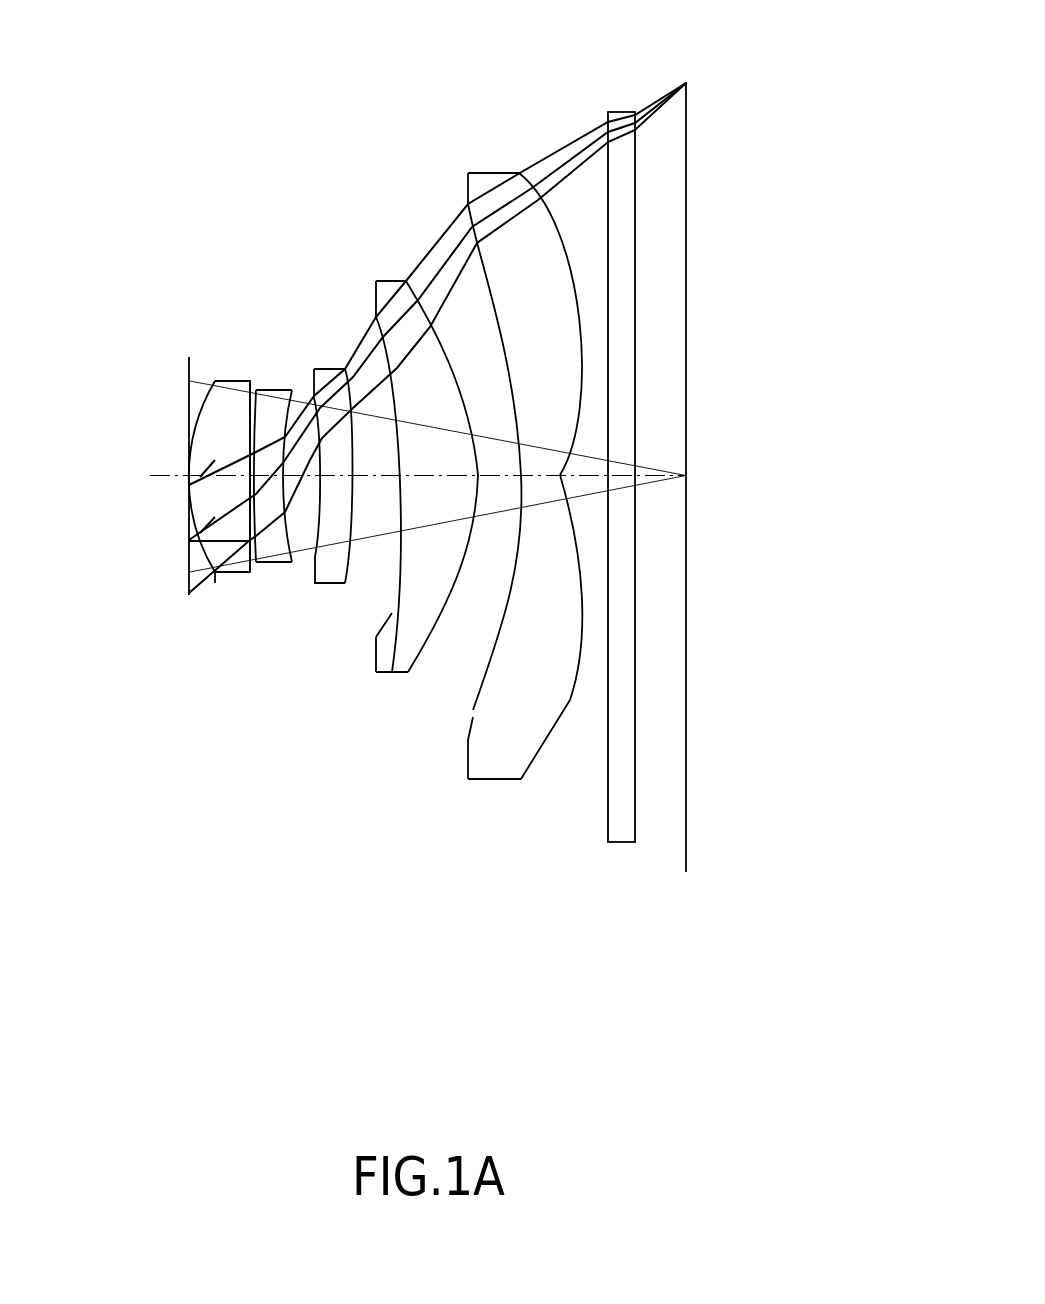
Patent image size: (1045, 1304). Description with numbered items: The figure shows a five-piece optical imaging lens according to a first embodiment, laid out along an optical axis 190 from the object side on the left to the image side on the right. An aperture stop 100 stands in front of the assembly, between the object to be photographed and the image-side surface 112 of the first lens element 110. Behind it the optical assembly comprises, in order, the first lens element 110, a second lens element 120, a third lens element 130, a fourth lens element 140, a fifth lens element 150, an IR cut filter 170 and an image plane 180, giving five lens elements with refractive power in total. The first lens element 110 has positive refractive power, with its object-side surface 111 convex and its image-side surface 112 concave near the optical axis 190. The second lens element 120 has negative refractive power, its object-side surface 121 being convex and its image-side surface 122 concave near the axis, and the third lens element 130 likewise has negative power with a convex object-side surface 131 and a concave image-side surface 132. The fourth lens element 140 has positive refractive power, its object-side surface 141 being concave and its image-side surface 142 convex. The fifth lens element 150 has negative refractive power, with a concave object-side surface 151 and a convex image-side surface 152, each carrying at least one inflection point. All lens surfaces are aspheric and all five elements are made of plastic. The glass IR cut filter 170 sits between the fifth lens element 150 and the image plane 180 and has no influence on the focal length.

The aperture stop 100 is at (215, 381).
The first lens element 110 is at (197, 495).
The object-side surface of the first lens element 111 is at (190, 557).
The image-side surface of the first lens element 112 is at (247, 566).
The second lens element 120 is at (261, 488).
The object-side surface of the second lens element 121 is at (255, 566).
The image-side surface of the second lens element 122 is at (289, 566).
The third lens element 130 is at (323, 496).
The object-side surface of the third lens element 131 is at (319, 565).
The image-side surface of the third lens element 132 is at (352, 585).
The fourth lens element 140 is at (414, 462).
The object-side surface of the fourth lens element 141 is at (392, 673).
The image-side surface of the fourth lens element 142 is at (441, 660).
The fifth lens element 150 is at (501, 449).
The object-side surface of the fifth lens element 151 is at (473, 710).
The image-side surface of the fifth lens element 152 is at (570, 700).
The IR cut filter 170 is at (624, 95).
The image plane 180 is at (687, 760).
The optical axis 190 is at (168, 476).